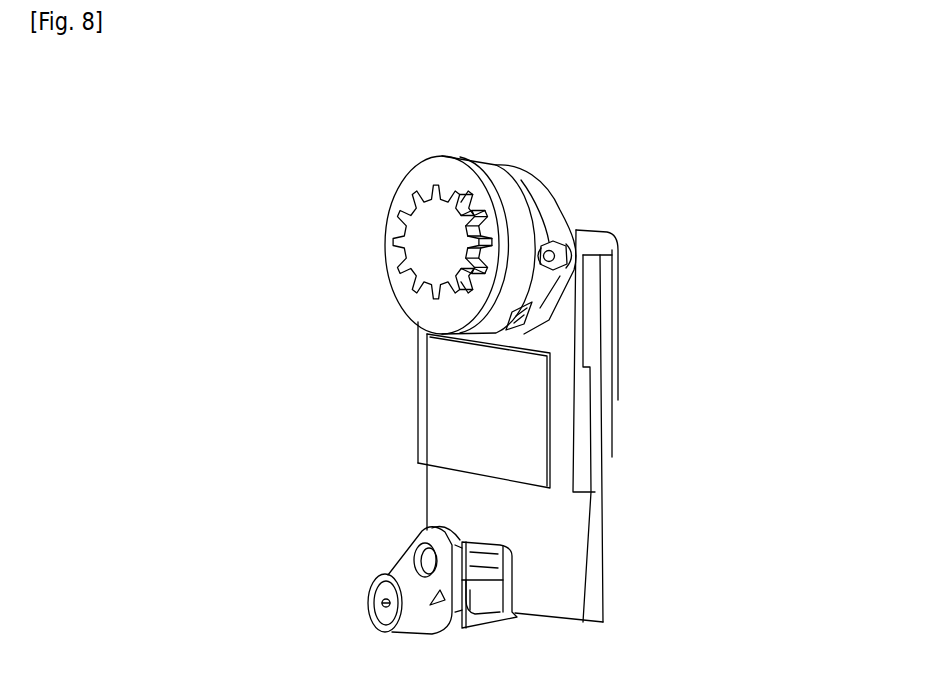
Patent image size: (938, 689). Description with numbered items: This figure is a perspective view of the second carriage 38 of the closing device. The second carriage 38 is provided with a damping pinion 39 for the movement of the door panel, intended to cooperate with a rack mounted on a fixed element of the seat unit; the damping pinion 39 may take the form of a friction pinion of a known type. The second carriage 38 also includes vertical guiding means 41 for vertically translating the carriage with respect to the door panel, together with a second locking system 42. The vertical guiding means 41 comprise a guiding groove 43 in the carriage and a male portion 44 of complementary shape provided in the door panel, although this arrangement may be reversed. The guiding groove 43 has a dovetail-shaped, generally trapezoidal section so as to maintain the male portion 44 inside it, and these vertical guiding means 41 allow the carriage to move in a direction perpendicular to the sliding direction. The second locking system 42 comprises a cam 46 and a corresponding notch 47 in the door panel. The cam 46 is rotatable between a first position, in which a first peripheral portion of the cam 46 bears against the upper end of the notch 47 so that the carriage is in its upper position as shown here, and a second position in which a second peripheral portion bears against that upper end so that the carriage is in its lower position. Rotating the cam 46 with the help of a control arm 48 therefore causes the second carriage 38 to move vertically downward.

The second carriage 38 is at (370, 293).
The damping pinion 39 is at (422, 233).
The vertical guiding means 41 is at (427, 415).
The second locking system 42 is at (488, 534).
The guiding groove 43 is at (553, 398).
The male portion 44 is at (490, 415).
The cam 46 is at (490, 565).
The notch 47 is at (500, 545).
The control arm 48 is at (400, 568).